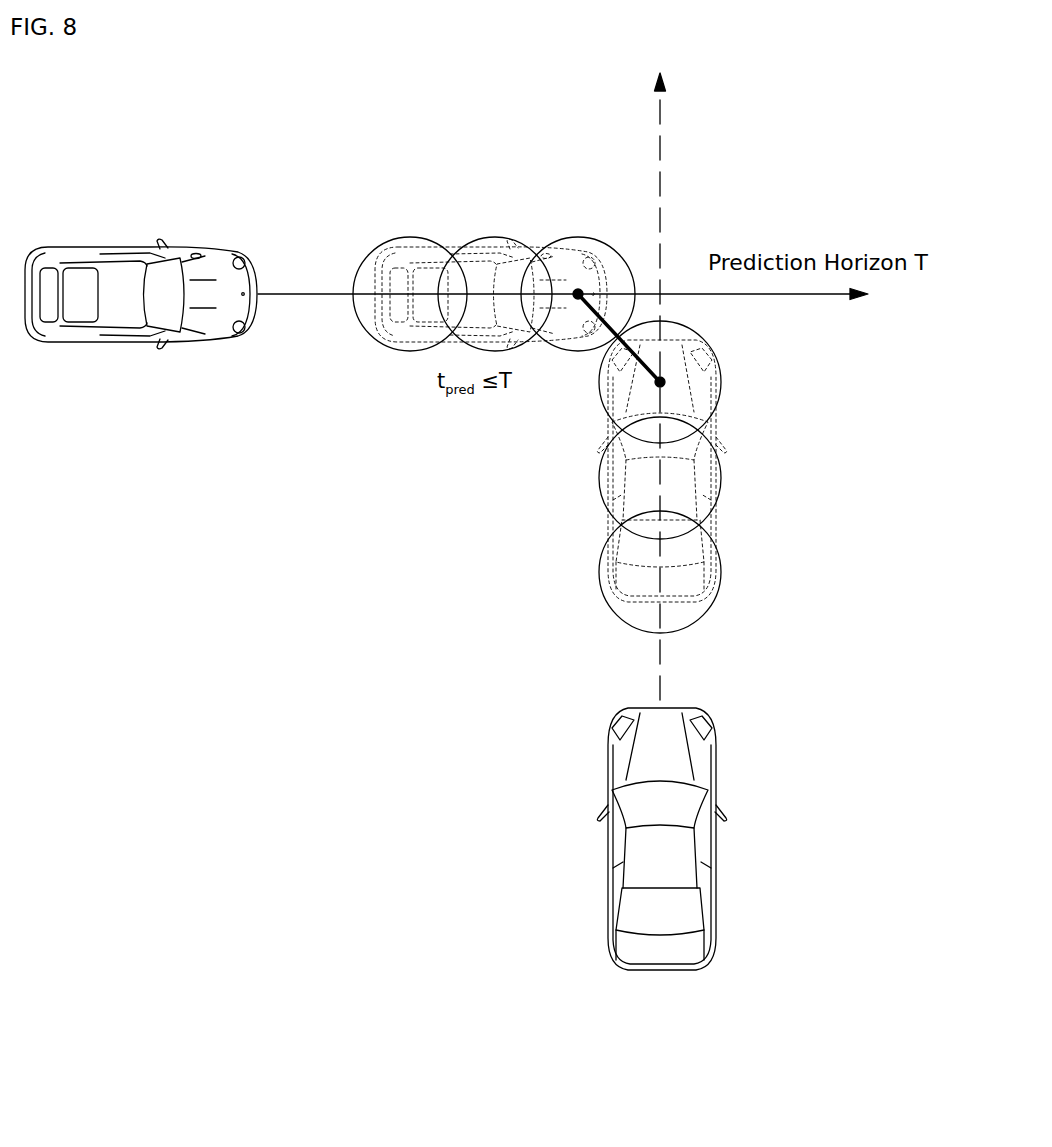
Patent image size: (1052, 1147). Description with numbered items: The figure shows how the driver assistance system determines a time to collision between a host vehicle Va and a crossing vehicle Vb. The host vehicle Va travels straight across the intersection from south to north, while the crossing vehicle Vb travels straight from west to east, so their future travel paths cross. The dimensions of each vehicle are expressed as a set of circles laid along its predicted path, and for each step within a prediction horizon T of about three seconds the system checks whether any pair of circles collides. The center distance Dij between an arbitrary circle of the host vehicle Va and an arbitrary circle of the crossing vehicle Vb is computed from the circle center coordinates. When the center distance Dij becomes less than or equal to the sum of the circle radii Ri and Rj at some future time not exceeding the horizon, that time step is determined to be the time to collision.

The host vehicle Va is at (715, 752).
The crossing vehicle Vb is at (214, 249).
The radius of host vehicle circle Ri is at (497, 284).
The radius of crossing vehicle circle Rj is at (677, 477).
The center distance Dij is at (612, 333).